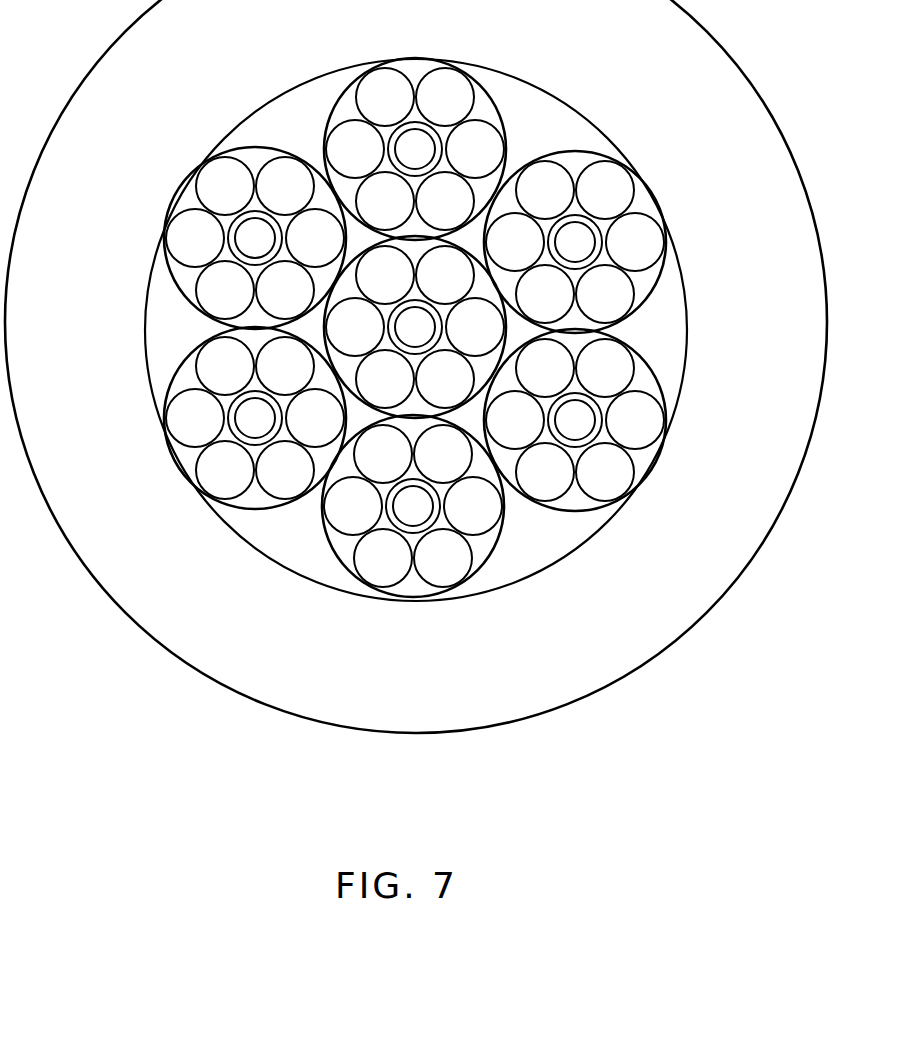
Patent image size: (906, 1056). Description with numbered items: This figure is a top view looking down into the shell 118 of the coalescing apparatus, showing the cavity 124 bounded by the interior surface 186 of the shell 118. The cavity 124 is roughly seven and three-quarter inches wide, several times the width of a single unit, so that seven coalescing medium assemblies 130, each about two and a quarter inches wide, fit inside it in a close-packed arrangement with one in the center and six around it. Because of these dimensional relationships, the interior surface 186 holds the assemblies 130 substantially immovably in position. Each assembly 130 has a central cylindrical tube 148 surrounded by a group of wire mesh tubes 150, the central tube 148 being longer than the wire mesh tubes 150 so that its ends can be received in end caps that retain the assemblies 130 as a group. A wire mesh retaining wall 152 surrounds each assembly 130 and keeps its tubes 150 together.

The shell 118 is at (640, 618).
The cavity 124 is at (283, 130).
The coalescing medium assembly 130 is at (440, 268).
The central cylindrical tube 148 is at (403, 130).
The wire mesh tube 150 is at (262, 490).
The wire mesh retaining wall 152 is at (182, 362).
The interior surface 186 is at (688, 326).